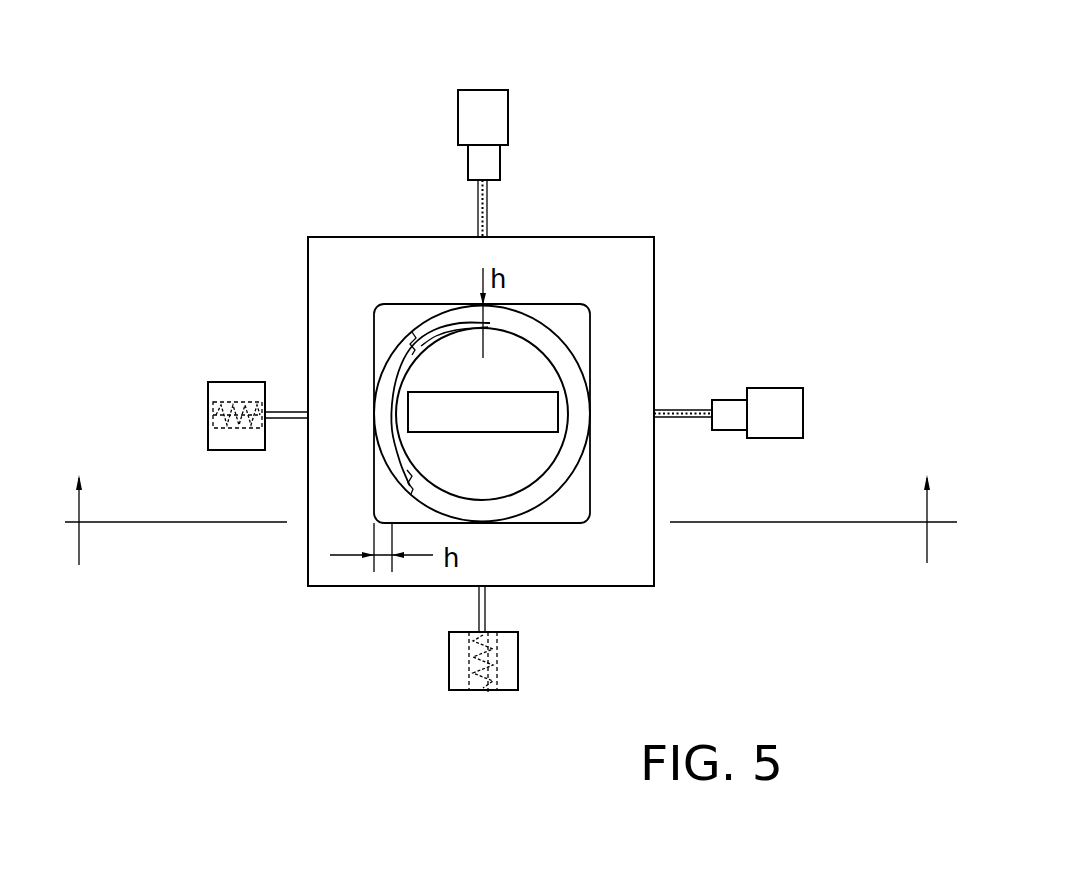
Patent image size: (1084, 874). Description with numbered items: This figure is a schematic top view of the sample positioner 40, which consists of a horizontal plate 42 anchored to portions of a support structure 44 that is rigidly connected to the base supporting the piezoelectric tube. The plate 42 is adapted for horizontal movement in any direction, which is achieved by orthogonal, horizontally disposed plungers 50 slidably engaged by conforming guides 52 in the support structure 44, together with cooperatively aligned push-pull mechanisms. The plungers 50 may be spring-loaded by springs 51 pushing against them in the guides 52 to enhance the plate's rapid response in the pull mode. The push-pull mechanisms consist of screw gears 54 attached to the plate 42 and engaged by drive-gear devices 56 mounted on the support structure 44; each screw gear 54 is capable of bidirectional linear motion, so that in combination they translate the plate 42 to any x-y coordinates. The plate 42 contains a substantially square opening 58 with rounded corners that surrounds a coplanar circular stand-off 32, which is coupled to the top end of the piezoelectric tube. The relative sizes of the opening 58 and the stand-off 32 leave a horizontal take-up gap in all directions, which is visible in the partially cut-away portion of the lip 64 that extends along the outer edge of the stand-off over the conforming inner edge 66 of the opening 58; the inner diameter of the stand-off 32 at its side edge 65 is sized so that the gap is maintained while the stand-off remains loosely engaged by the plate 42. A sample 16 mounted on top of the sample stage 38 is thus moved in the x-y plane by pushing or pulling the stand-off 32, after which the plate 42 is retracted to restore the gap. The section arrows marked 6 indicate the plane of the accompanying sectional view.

The section line 6- 6 is at (510, 539).
The sample 16 is at (430, 407).
The stand-off 32 is at (577, 413).
The sample stage 38 is at (535, 452).
The positioner 40 is at (705, 210).
The horizontal plate 42 is at (640, 328).
The support structure 44 is at (500, 128).
The plungers 50 is at (280, 410).
The springs 51 is at (212, 415).
The guides 52 is at (245, 400).
The screw gears 54 is at (487, 223).
The drive-gear devices 56 is at (495, 162).
The opening 58 is at (563, 312).
The lip 64 is at (410, 337).
The side edge 65 is at (380, 388).
The inner edge 66 is at (375, 412).